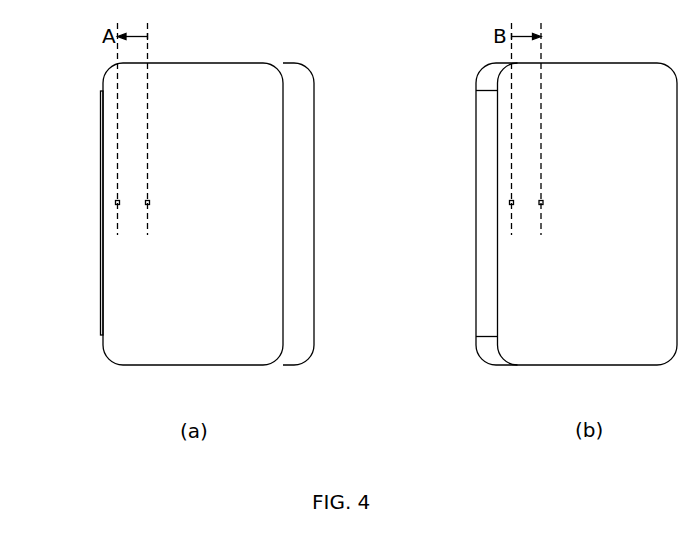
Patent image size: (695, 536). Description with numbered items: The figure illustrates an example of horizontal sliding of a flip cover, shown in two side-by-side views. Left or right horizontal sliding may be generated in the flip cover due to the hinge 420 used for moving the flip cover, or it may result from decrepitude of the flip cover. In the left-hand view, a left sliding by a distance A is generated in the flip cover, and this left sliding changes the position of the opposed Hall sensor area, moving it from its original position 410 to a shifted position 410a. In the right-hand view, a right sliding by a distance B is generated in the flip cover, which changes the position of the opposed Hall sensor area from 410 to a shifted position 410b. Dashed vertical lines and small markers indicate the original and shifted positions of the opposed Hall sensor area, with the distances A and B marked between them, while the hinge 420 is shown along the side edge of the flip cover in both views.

The opposed Hall sensor area 410 is at (150, 202).
The opposed Hall sensor area after left sliding 410a is at (116, 202).
The opposed Hall sensor area after right sliding 410b is at (543, 202).
The hinge 420 is at (100, 313).